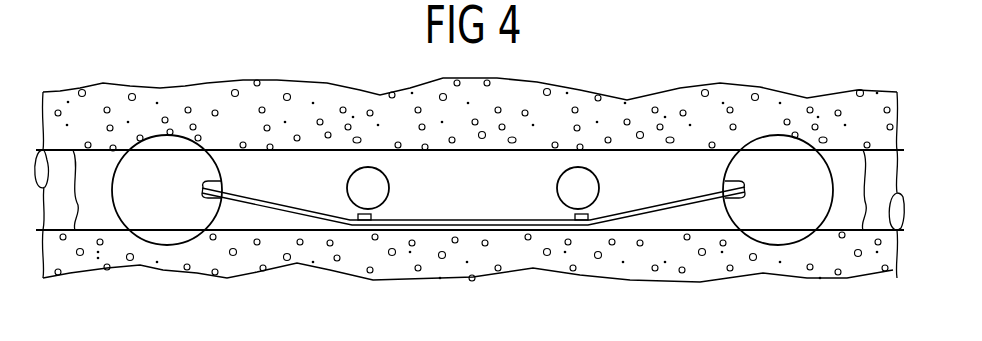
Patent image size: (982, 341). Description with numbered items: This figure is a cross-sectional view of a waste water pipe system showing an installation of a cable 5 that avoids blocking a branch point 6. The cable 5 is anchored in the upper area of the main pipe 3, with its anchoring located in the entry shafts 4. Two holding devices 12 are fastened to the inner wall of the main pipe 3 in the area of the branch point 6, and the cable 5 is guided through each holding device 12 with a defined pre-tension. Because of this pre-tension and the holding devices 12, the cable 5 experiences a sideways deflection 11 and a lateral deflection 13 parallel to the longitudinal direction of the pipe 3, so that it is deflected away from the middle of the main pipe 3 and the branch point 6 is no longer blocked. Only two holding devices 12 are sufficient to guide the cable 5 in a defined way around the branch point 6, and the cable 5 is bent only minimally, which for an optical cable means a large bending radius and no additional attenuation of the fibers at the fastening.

The main pipe 3 is at (100, 157).
The entry shaft 4 is at (155, 143).
The cable 5 is at (239, 201).
The branch point 6 is at (380, 187).
The sideways deflection 11 is at (290, 198).
The holding device 12 is at (363, 225).
The lateral deflection 13 is at (472, 220).